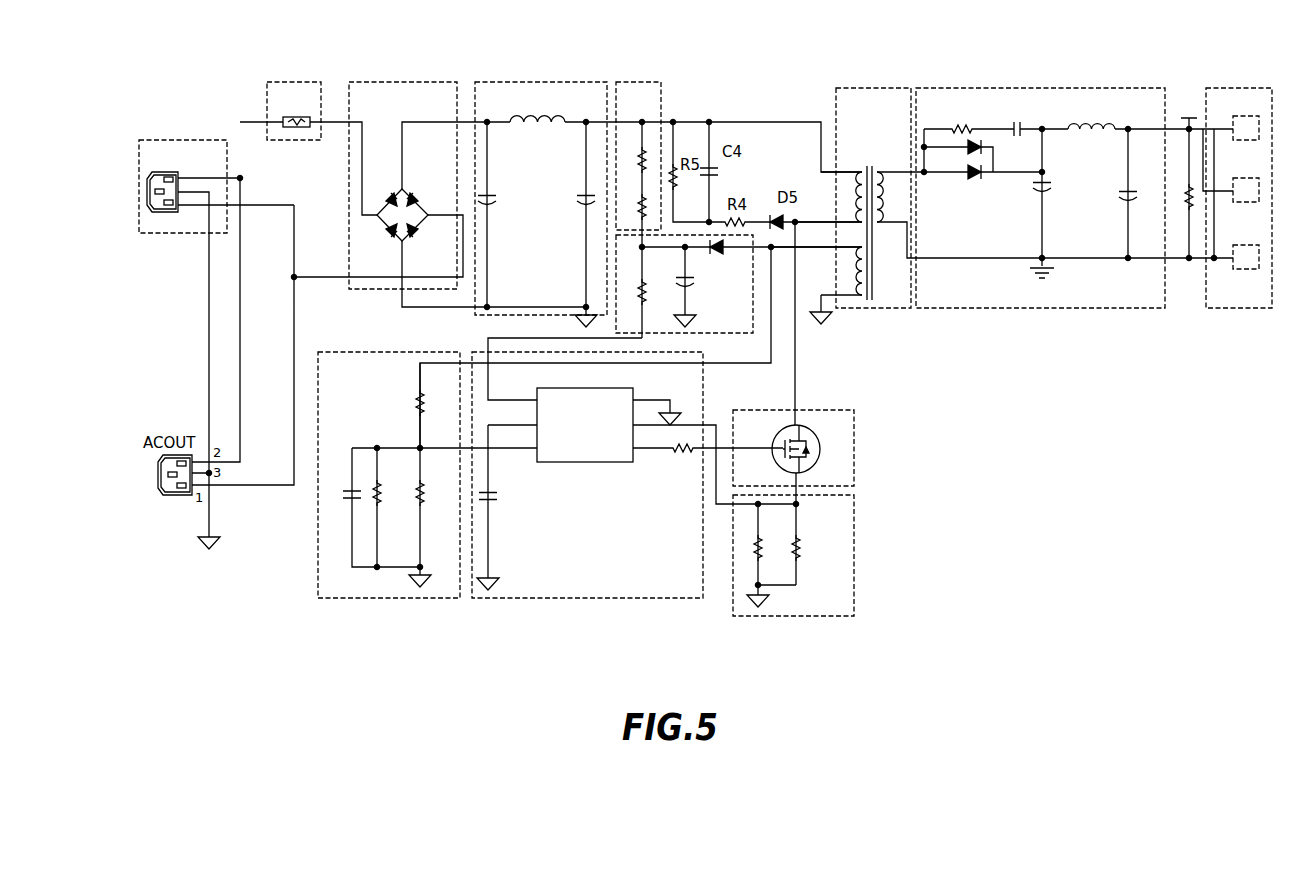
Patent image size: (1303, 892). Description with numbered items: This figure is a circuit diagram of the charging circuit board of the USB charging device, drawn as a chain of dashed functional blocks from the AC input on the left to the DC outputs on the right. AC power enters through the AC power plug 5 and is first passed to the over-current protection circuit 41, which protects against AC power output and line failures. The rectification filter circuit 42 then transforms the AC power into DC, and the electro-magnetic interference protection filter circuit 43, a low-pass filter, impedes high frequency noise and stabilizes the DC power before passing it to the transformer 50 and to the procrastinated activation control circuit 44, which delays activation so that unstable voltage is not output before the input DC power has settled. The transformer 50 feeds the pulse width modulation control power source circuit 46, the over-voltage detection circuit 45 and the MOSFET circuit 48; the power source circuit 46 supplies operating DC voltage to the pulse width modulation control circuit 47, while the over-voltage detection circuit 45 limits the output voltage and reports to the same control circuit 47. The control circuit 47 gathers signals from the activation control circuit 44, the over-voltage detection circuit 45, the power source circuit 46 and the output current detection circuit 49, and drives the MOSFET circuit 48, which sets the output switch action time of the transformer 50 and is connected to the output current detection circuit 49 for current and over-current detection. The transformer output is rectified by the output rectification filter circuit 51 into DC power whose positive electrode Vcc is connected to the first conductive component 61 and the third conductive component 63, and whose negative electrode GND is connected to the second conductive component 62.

The AC power plug 5 is at (176, 140).
The over-current protection circuit 41 is at (300, 82).
The rectification filter circuit 42 is at (413, 82).
The electro-magnetic interference (EMI) protection filter circuit 43 is at (540, 82).
The procrastinated activation control circuit 44 is at (637, 82).
The over-voltage detection circuit 45 is at (388, 598).
The pulse width modulation (PWM) control power source circuit 46 is at (715, 333).
The pulse width modulation (PWM) control circuit 47 is at (588, 598).
The metal-oxide-semiconductor field effect transistor (MOSFET) circuit 48 is at (815, 410).
The output current detection circuit 49 is at (815, 616).
The transformer 50 is at (862, 88).
The output rectification filter circuit 51 is at (1010, 88).
The first conductive component 61 is at (1259, 129).
The second conductive component 62 is at (1259, 191).
The third conductive component 63 is at (1259, 258).